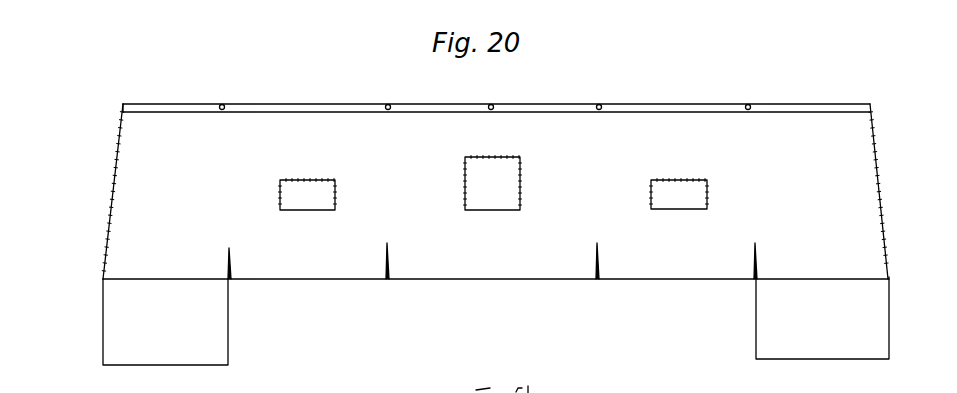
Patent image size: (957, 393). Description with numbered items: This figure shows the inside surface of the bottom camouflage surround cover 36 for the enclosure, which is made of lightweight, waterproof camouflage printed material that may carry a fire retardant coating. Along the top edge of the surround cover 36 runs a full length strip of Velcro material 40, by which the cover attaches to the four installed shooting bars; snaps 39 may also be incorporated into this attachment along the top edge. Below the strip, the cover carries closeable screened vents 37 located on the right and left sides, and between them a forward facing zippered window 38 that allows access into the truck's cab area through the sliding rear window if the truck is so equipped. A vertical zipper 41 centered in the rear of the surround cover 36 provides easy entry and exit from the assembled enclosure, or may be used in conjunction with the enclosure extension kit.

The surround cover 36 is at (225, 160).
The closeable screened vents 37 is at (303, 200).
The forward facing zippered window 38 is at (493, 190).
The snaps 39 is at (385, 104).
The full length strip of Velcro material 40 is at (123, 104).
The vertical zipper 41 is at (104, 264).